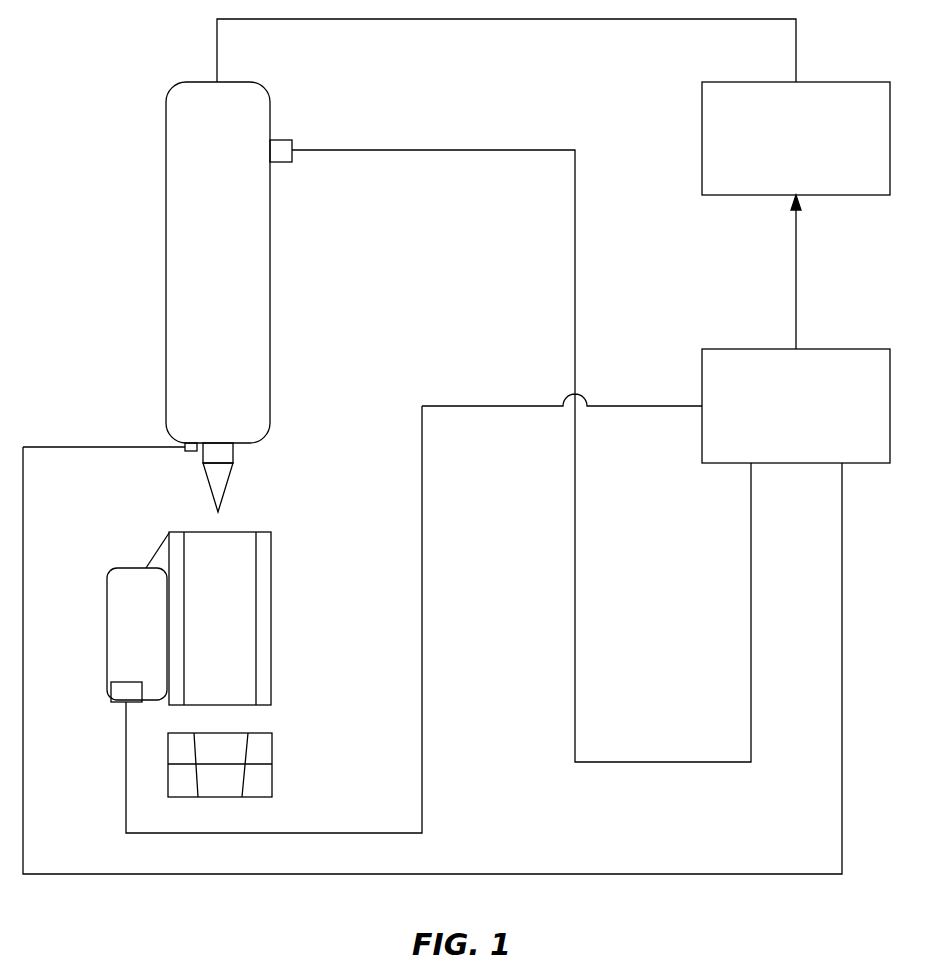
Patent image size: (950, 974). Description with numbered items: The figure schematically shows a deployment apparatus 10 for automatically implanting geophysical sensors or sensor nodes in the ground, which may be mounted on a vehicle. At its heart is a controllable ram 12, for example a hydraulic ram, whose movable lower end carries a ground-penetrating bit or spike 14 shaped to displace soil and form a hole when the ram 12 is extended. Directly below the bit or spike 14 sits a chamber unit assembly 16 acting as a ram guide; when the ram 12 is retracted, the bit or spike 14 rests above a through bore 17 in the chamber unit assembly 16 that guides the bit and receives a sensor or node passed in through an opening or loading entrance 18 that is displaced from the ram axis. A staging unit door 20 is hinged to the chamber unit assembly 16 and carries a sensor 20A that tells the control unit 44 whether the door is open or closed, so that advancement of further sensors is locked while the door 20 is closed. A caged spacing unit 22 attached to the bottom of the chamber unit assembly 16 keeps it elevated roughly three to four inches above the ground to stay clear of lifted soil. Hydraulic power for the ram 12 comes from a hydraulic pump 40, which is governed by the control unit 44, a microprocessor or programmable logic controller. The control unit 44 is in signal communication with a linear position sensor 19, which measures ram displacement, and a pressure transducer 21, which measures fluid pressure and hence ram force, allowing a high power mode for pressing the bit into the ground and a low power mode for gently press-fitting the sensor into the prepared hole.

The deployment apparatus 10 is at (102, 211).
The controllable ram 12 is at (270, 293).
The ground-penetrating bit or spike 14 is at (236, 452).
The chamber unit assembly 16 is at (271, 618).
The through bore 17 is at (224, 573).
The opening (loading entrance) 18 is at (158, 550).
The linear position sensor 19 is at (188, 452).
The staging unit door 20 is at (107, 625).
The sensor 20A is at (118, 705).
The pressure transducer 21 is at (282, 140).
The caged spacing unit 22 is at (272, 753).
The hydraulic pump 40 is at (858, 82).
The control unit 44 is at (858, 349).